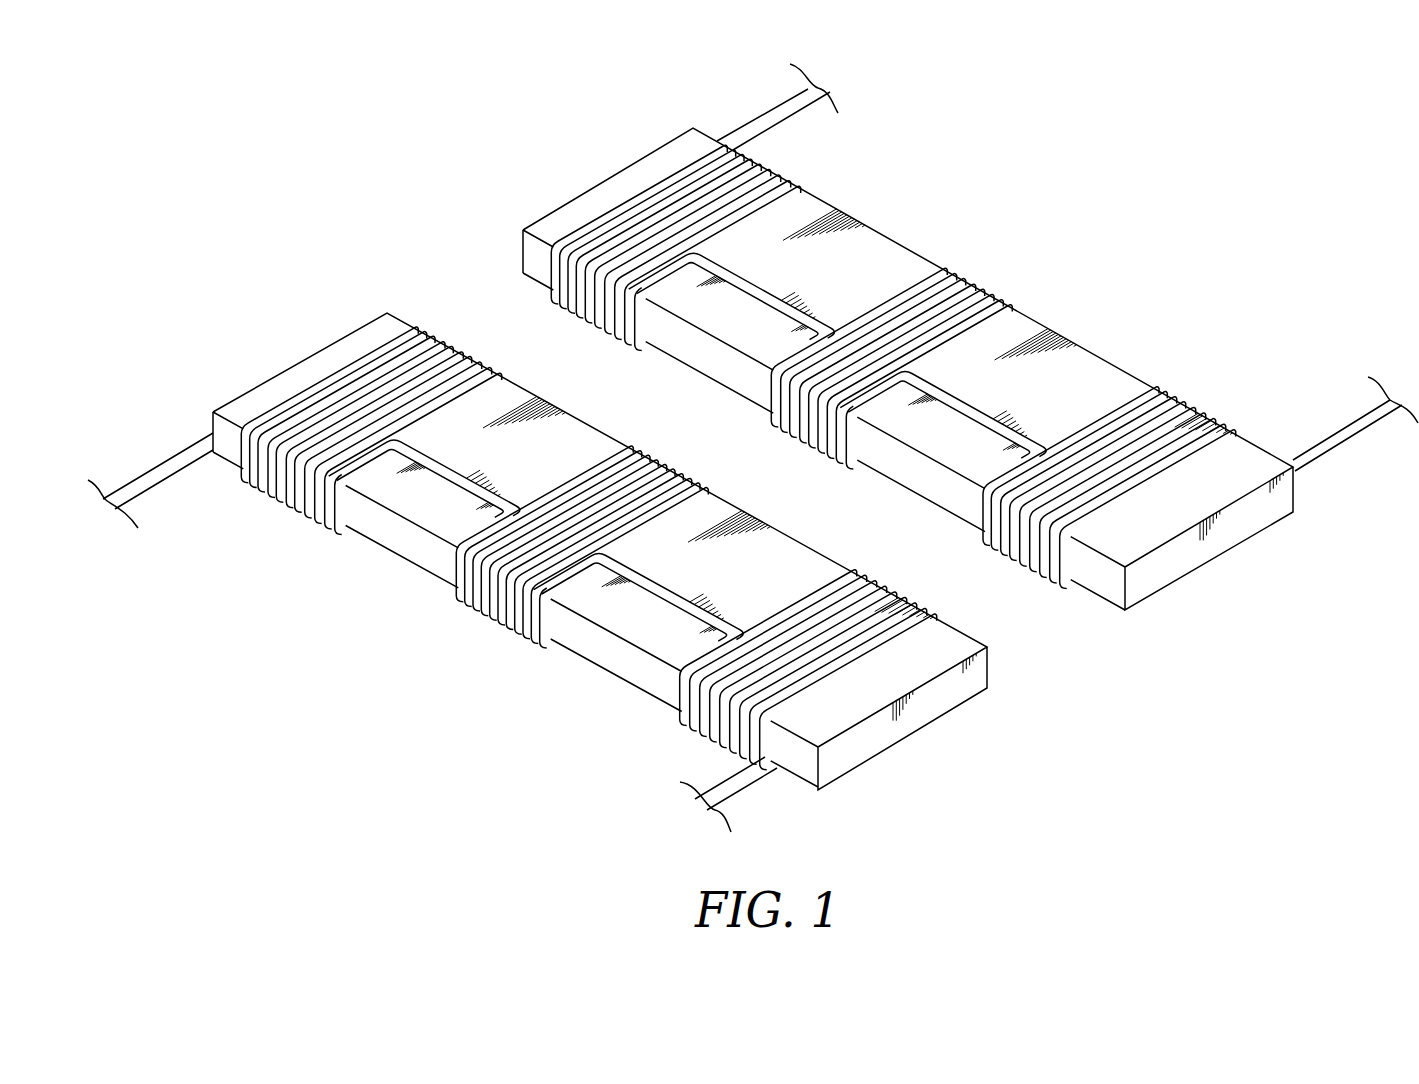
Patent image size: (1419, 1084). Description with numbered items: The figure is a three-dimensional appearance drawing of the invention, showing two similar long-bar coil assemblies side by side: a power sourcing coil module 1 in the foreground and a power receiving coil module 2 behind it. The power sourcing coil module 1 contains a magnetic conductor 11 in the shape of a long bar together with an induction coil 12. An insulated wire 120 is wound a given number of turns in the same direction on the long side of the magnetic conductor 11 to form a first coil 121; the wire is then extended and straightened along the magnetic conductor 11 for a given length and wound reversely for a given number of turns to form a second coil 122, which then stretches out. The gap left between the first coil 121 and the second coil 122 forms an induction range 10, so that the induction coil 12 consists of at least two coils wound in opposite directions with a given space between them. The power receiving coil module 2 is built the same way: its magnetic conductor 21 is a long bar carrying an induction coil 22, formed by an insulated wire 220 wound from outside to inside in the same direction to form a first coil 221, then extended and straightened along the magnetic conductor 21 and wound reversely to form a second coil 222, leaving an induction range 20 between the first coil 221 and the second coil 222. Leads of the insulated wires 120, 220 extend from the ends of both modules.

The power sourcing coil module 1 is at (553, 590).
The induction range 10 is at (537, 572).
The magnetic conductor 11 is at (870, 738).
The induction coil 12 is at (512, 579).
The insulated wire 120 is at (717, 797).
The first coil 121 is at (280, 480).
The second coil 122 is at (505, 592).
The power receiving coil module 2 is at (970, 374).
The induction range 20 is at (970, 337).
The magnetic conductor 21 is at (1197, 542).
The induction coil 22 is at (984, 326).
The insulated wire 220 is at (1240, 290).
The first coil 221 is at (757, 173).
The second coil 222 is at (970, 297).